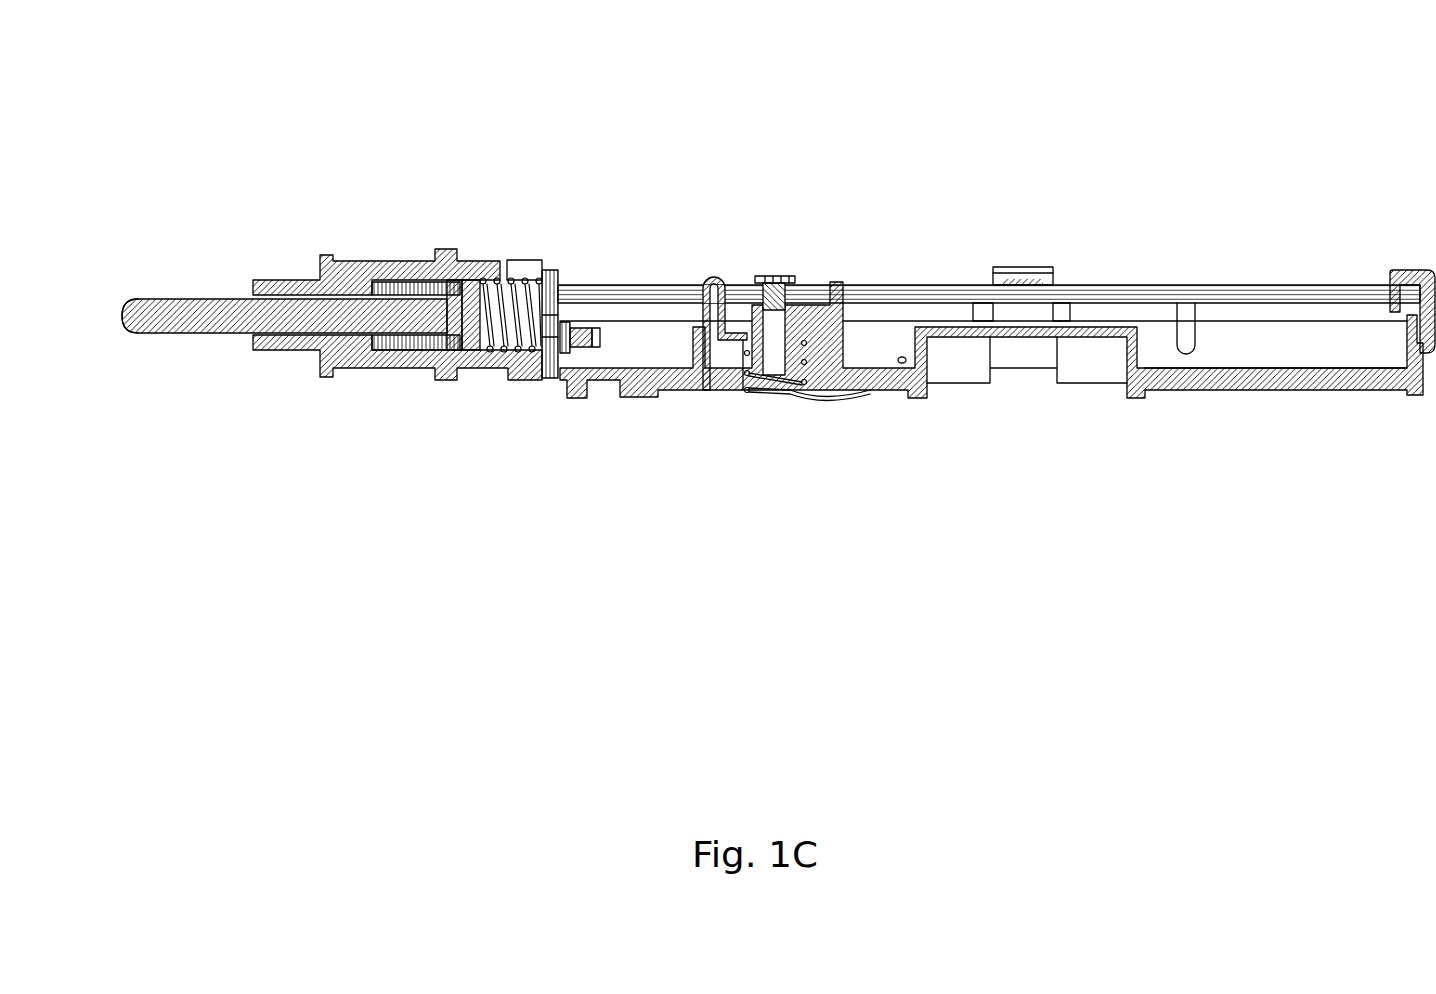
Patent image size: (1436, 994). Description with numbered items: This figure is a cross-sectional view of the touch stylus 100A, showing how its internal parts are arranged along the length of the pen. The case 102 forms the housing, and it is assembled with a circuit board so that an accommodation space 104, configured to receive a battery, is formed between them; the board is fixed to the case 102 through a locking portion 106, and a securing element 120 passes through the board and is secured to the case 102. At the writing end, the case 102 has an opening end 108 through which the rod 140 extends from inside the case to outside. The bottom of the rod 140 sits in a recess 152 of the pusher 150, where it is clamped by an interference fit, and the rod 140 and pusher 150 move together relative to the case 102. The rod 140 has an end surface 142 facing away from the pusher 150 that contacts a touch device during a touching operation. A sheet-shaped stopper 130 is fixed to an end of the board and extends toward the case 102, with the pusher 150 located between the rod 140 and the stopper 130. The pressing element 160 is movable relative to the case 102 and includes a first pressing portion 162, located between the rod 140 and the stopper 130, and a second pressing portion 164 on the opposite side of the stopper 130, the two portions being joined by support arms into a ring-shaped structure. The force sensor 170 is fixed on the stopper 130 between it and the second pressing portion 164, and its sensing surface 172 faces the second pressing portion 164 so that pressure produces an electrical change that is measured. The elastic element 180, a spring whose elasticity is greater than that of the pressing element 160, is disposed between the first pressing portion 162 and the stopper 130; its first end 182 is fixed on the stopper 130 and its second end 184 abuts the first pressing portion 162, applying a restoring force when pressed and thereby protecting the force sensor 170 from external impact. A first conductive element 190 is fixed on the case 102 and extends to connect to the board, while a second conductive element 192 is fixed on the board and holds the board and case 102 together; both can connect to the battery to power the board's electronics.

The touch stylus 100A is at (67, 100).
The case 102 is at (1245, 382).
The accommodation space 104 is at (1312, 374).
The locking portion 106 is at (1020, 267).
The opening end 108 is at (341, 279).
The securing element 120 is at (795, 276).
The stopper 130 is at (547, 378).
The rod 140 is at (192, 315).
The end surface 142 is at (111, 296).
The pusher 150 is at (384, 371).
The recess 152 is at (411, 279).
The pressing element 160 is at (941, 234).
The first pressing portion 162 is at (470, 287).
The second pressing portion 164 is at (989, 235).
The force sensor 170 is at (577, 380).
The sensing surface 172 is at (582, 357).
The elastic element 180 is at (423, 428).
The first end 182 is at (536, 290).
The second end 184 is at (470, 315).
The first conductive element 190 is at (730, 342).
The second conductive element 192 is at (1410, 270).